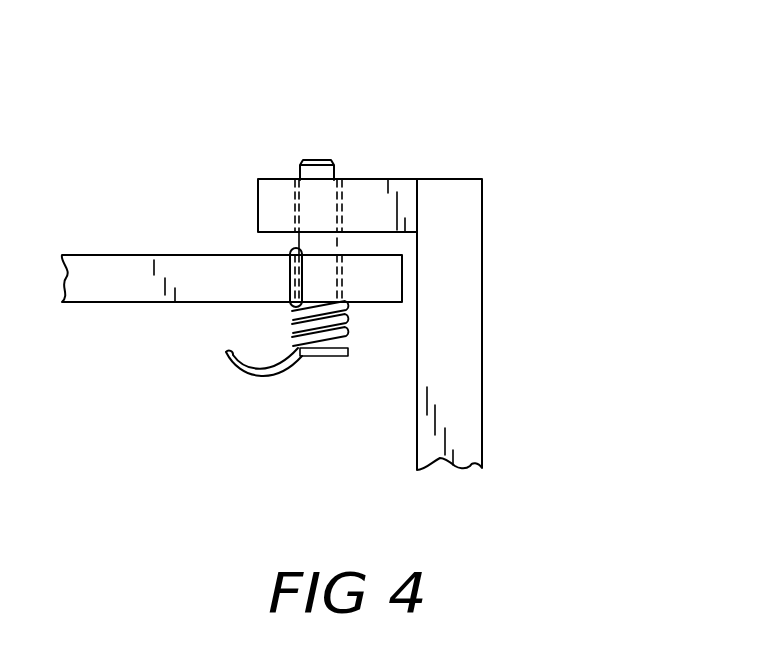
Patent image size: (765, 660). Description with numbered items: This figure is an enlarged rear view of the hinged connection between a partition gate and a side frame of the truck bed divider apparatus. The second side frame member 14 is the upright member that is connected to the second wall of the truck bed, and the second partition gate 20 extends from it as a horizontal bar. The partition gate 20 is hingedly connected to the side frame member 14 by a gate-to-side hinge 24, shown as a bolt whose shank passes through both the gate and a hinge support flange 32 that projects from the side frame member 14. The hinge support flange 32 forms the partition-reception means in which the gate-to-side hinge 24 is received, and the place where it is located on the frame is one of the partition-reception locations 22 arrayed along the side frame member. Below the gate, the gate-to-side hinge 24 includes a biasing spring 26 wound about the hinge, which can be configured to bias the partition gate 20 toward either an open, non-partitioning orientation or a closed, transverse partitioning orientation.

The second side frame member 14 is at (460, 342).
The second partition gate 20 is at (128, 268).
The partition-reception location 22 is at (346, 136).
The gate-to-side hinge 24 is at (298, 163).
The biasing spring 26 is at (290, 336).
The hinge support flange 32 is at (373, 177).